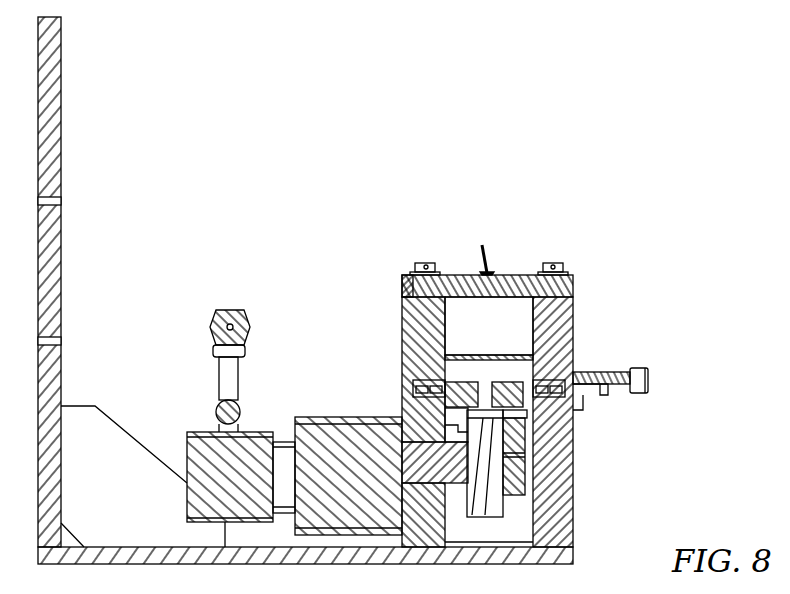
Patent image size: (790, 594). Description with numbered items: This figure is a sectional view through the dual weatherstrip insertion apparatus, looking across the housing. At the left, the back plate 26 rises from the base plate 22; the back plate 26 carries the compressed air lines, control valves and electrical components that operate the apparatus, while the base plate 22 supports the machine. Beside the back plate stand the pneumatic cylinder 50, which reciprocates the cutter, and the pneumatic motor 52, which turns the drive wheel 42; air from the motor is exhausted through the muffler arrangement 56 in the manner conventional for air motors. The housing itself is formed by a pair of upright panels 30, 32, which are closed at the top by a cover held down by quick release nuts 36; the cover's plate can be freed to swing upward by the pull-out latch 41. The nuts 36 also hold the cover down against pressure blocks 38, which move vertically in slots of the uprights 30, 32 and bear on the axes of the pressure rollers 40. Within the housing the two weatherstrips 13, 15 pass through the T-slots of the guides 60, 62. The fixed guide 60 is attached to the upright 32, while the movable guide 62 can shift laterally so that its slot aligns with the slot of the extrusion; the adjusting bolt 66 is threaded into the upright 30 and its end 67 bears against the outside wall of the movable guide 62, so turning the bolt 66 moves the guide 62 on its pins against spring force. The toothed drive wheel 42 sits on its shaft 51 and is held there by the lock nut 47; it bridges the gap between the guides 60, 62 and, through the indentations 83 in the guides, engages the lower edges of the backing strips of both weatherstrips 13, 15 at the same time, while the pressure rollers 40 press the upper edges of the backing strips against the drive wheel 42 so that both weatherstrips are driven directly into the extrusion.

The back plate 26 is at (62, 220).
The base plate 22 is at (133, 557).
The pneumatic cylinder 50 is at (190, 455).
The pneumatic motor 52 is at (326, 438).
The muffler arrangement 56 is at (222, 312).
The pressure rollers 40 is at (458, 306).
The quick release nuts 36 is at (412, 268).
The pull-out latch 41 is at (492, 272).
The upright panel 32 is at (408, 331).
The upright panel 30 is at (572, 497).
The pressure blocks 38 is at (497, 322).
The end of adjustment bolt 67 is at (542, 380).
The indentations 83 is at (428, 419).
The weatherstrip 15 is at (536, 411).
The fixed guide 60 is at (487, 380).
The movable guide 62 is at (523, 380).
The weatherstrip 13 is at (444, 414).
The drive wheel 42 is at (491, 508).
The lock nut 47 is at (530, 458).
The shaft 51 is at (455, 484).
The adjusting bolt 66 is at (652, 383).